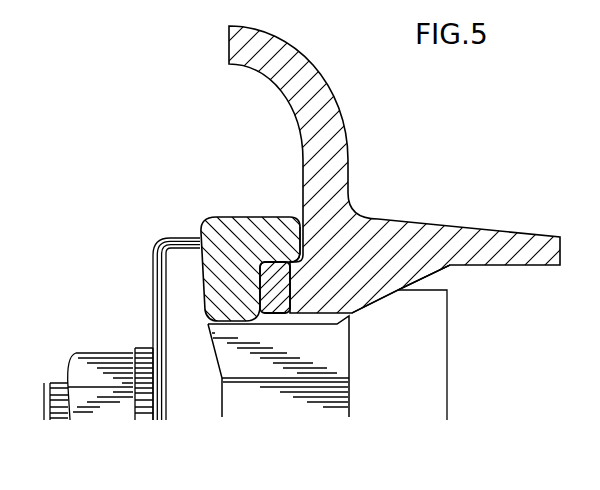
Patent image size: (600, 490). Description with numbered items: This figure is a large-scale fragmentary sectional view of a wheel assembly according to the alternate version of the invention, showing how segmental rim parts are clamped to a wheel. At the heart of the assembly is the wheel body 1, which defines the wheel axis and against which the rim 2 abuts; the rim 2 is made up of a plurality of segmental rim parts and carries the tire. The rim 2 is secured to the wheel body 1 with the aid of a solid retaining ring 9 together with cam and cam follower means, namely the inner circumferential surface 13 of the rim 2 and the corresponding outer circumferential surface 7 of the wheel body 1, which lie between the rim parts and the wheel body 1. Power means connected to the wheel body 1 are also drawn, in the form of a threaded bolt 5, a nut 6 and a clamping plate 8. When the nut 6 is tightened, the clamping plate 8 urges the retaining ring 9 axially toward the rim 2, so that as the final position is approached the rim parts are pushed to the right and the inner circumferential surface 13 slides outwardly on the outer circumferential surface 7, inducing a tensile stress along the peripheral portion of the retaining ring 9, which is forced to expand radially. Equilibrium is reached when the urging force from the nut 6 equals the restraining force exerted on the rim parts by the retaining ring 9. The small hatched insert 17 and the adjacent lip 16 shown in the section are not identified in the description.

The wheel body 1 is at (440, 320).
The rim 2 is at (328, 107).
The threaded bolt 5 is at (50, 383).
The nut 6 is at (108, 365).
The outer circumferential surface 7 is at (382, 306).
The clamping plate 8 is at (170, 260).
The retaining ring 9 is at (218, 216).
The inner circumferential surface 13 is at (398, 290).
The sealing lip 16 is at (280, 260).
The reinforcing ring 17 is at (284, 300).